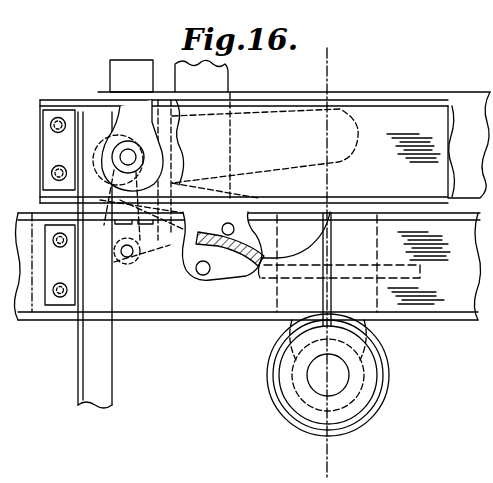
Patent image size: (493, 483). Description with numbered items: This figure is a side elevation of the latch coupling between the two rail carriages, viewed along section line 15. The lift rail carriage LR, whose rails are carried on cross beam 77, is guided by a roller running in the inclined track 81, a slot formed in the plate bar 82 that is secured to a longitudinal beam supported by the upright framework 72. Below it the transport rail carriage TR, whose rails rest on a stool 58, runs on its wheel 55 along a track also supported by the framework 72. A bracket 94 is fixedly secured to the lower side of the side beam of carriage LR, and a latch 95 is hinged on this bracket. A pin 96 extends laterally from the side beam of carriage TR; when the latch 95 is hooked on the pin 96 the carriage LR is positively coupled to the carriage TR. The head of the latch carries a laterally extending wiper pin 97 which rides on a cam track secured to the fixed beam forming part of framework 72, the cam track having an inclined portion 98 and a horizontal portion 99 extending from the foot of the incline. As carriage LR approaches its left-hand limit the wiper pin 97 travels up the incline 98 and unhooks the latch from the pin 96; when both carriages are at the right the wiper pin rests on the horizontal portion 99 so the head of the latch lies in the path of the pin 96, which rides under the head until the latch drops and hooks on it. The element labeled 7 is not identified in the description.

The section line 15 is at (346, 60).
The lift rail carriage LR is at (409, 92).
The transport rail carriage TR is at (273, 290).
The plate bar 82 is at (42, 152).
The upright framework 72 is at (88, 362).
The cross beam 77 is at (120, 70).
The stool 58 is at (228, 70).
The inclined track 81 is at (273, 166).
The bracket 94 is at (108, 236).
The latch 95 is at (166, 245).
The pin 96 is at (203, 276).
The wiper pin 97 is at (260, 198).
The inclined portion of cam track 98 is at (264, 253).
The horizontal portion of cam track 99 is at (352, 266).
The carriage wheel 55 is at (276, 406).
The rail member 7 is at (465, 248).